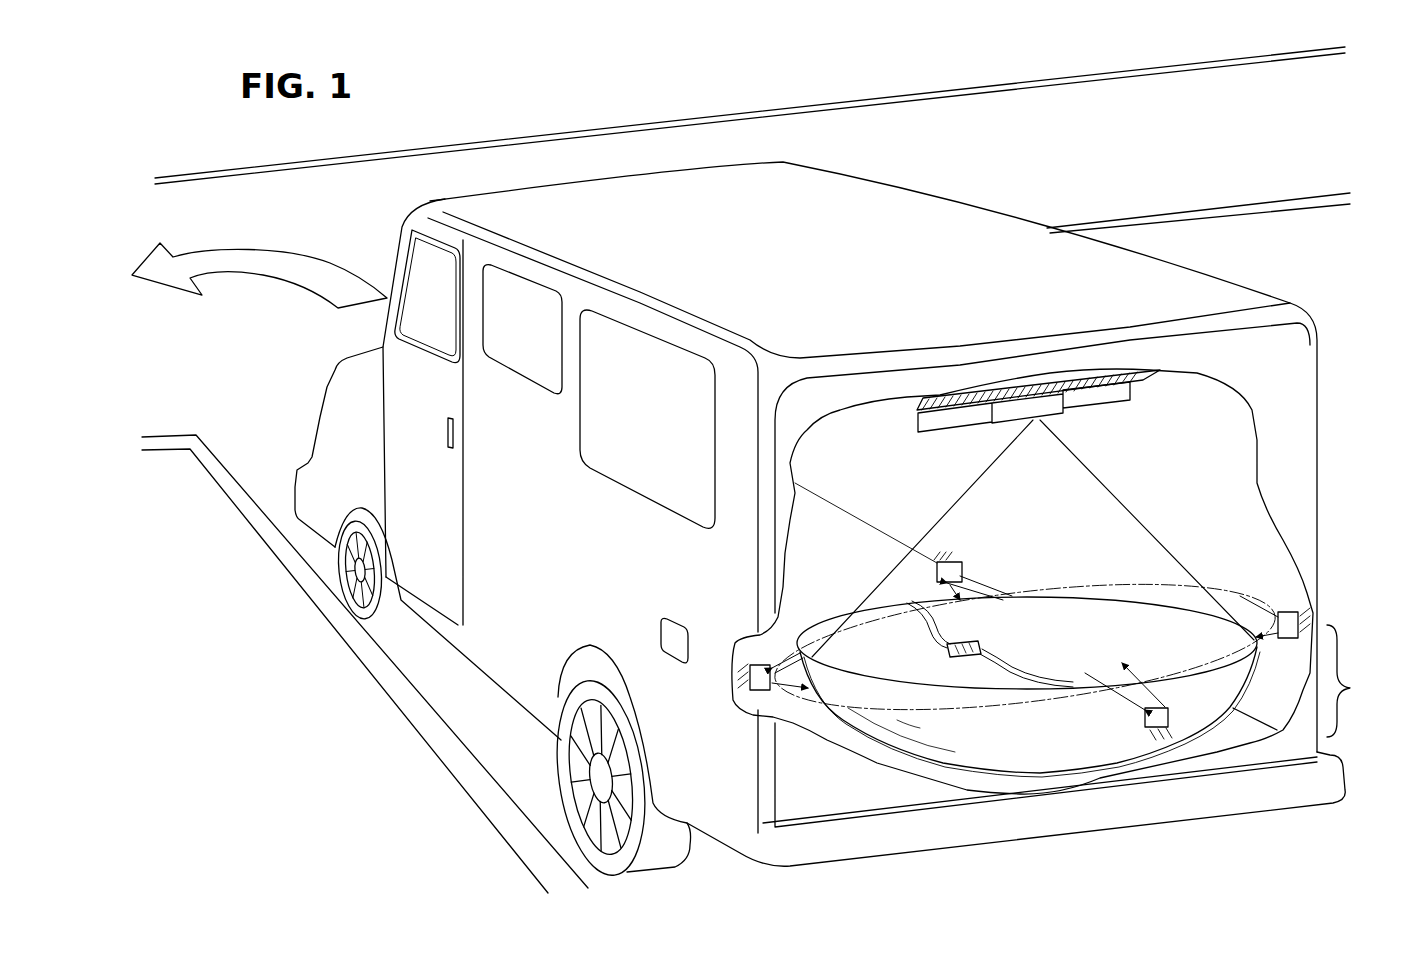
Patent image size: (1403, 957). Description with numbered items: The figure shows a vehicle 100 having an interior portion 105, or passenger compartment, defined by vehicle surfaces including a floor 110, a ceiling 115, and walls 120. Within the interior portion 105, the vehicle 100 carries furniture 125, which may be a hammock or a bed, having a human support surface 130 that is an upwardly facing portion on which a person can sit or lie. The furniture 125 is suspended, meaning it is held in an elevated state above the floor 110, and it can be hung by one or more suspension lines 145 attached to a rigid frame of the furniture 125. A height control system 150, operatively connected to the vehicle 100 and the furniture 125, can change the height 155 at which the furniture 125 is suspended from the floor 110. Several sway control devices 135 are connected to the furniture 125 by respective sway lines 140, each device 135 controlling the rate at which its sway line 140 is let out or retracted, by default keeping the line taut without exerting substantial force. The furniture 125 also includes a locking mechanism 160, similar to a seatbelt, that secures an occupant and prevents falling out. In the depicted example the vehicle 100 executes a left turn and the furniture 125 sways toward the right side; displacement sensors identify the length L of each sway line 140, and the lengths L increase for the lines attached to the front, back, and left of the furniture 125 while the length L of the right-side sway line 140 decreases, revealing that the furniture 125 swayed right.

The vehicle 100 is at (1257, 295).
The interior portion 105 is at (1229, 435).
The floor 110 is at (811, 562).
The ceiling 115 is at (938, 292).
The walls 120 is at (1123, 439).
The furniture 125 is at (1207, 727).
The human support surface 130 is at (970, 770).
The sway control device 135 is at (1033, 405).
The sway line 140 is at (1000, 598).
The suspension line 145 is at (957, 495).
The height control system 150 is at (1103, 400).
The height 155 is at (1353, 687).
The locking mechanism 160 is at (947, 652).
The length L is at (930, 600).